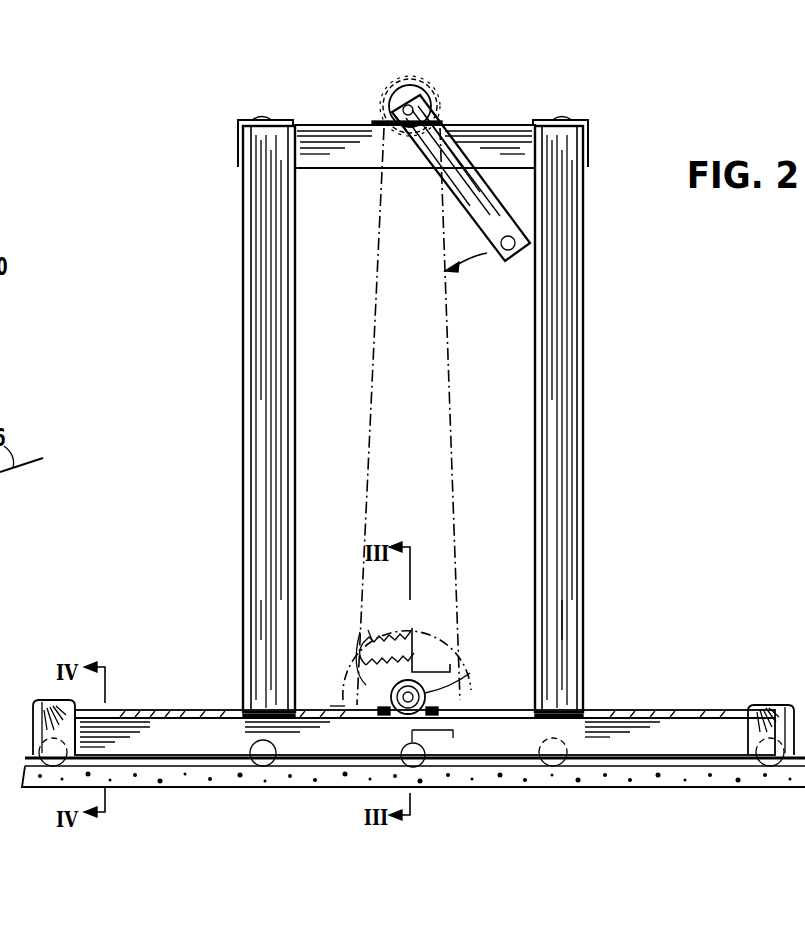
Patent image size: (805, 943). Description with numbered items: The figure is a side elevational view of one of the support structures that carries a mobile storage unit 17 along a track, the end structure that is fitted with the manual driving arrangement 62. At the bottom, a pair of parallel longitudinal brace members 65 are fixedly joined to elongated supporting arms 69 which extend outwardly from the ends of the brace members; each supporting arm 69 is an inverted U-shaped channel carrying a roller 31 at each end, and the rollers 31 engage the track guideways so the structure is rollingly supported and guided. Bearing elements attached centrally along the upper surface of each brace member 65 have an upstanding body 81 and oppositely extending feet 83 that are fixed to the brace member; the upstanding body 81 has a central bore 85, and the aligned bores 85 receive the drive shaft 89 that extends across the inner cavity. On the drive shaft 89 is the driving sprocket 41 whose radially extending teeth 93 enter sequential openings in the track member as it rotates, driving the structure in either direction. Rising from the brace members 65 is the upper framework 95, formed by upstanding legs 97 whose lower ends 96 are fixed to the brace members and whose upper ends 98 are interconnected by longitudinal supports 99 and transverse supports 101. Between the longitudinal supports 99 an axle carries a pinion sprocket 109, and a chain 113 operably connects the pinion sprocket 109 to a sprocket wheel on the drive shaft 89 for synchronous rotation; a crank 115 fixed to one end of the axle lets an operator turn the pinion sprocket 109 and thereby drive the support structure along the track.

The mobile storage unit 17 is at (413, 717).
The roller 31 is at (752, 762).
The driving sprocket 41 is at (336, 707).
The manual driving arrangement 62 is at (688, 399).
The longitudinal brace member 65 is at (527, 748).
The elongated supporting arm 69 is at (200, 732).
The upstanding body 81 is at (452, 674).
The feet 83 is at (426, 693).
The central bore 85 is at (383, 641).
The drive shaft 89 is at (401, 695).
The teeth 93 is at (372, 632).
The upper framework 95 is at (430, 401).
The lower ends 96 is at (240, 710).
The upstanding leg 97 is at (261, 616).
The upper ends 98 is at (243, 186).
The longitudinal support 99 is at (472, 125).
The transverse support 101 is at (238, 136).
The pinion sprocket 109 is at (391, 99).
The chain 113 is at (385, 690).
The crank 115 is at (506, 220).